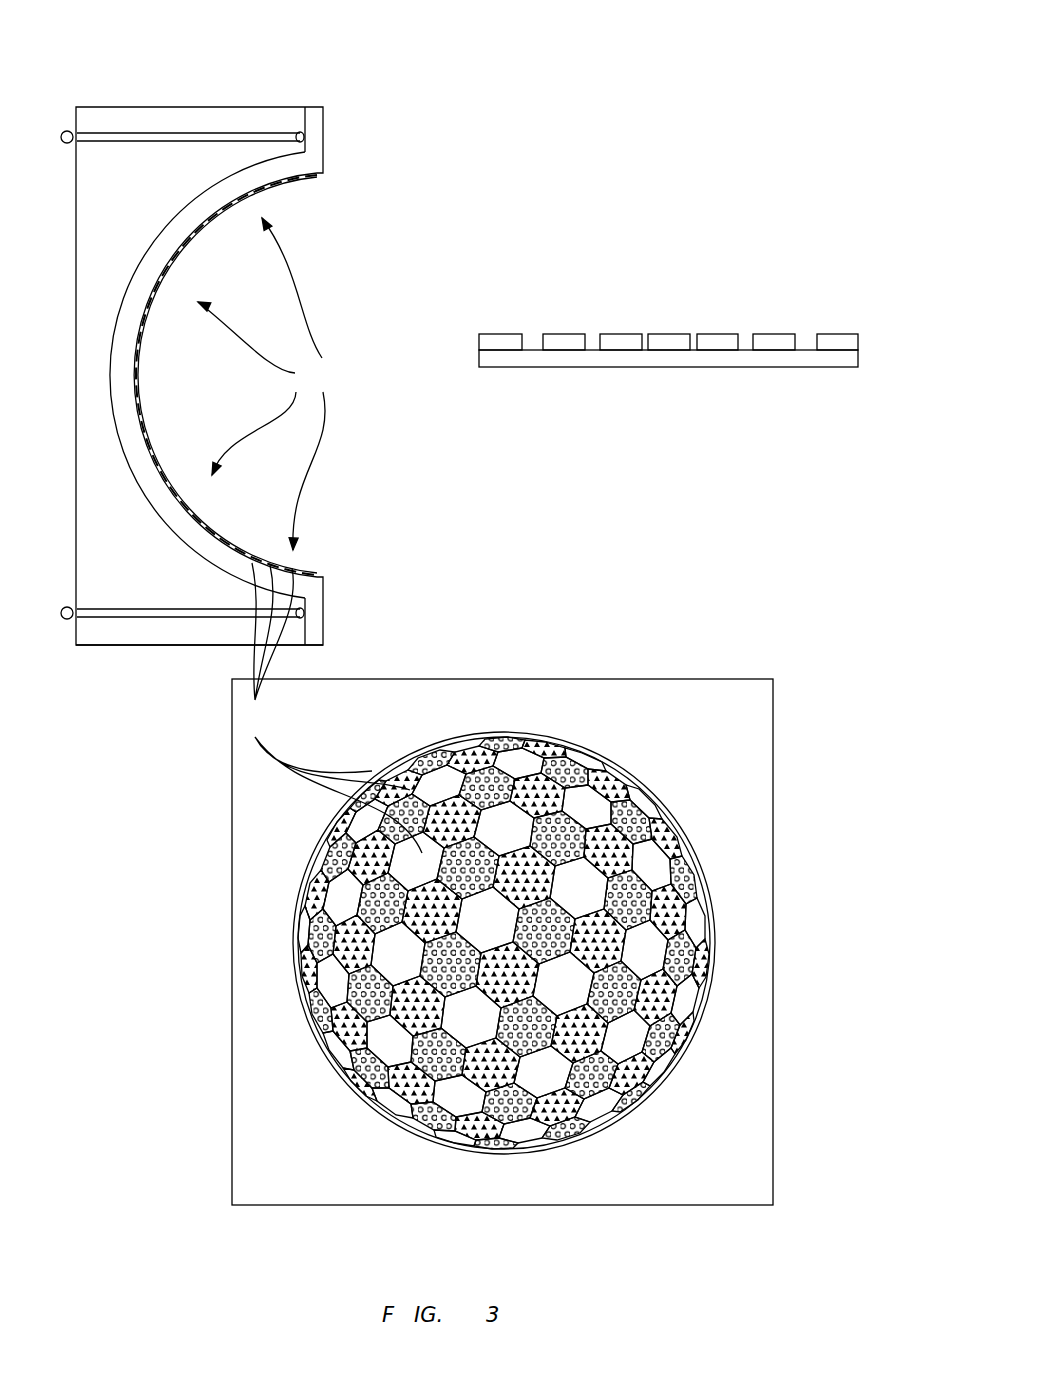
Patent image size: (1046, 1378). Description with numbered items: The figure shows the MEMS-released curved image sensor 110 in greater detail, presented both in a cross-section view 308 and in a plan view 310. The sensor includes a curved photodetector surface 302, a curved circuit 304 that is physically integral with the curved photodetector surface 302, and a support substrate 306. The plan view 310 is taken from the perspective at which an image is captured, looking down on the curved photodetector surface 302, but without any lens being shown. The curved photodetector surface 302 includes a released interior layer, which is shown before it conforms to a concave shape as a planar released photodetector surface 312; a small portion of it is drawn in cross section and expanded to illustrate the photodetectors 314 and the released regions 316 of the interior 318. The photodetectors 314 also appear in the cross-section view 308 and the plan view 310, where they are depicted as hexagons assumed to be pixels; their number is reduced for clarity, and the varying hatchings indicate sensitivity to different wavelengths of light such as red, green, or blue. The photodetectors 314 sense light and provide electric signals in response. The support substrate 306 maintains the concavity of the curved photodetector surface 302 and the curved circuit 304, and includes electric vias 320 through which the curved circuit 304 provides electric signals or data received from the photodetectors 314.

The MEMS-released curved image sensor 110 is at (733, 120).
The curved photodetector surface 302 is at (629, 772).
The curved circuit 304 is at (316, 122).
The support substrate 306 is at (125, 120).
The cross-section view 308 is at (409, 152).
The plan view 310 is at (741, 637).
The planar released photodetector surface 312 is at (605, 334).
The photodetectors 314 is at (838, 342).
The released regions 316 is at (803, 340).
The interior 318 is at (445, 342).
The electric vias 320 is at (207, 612).